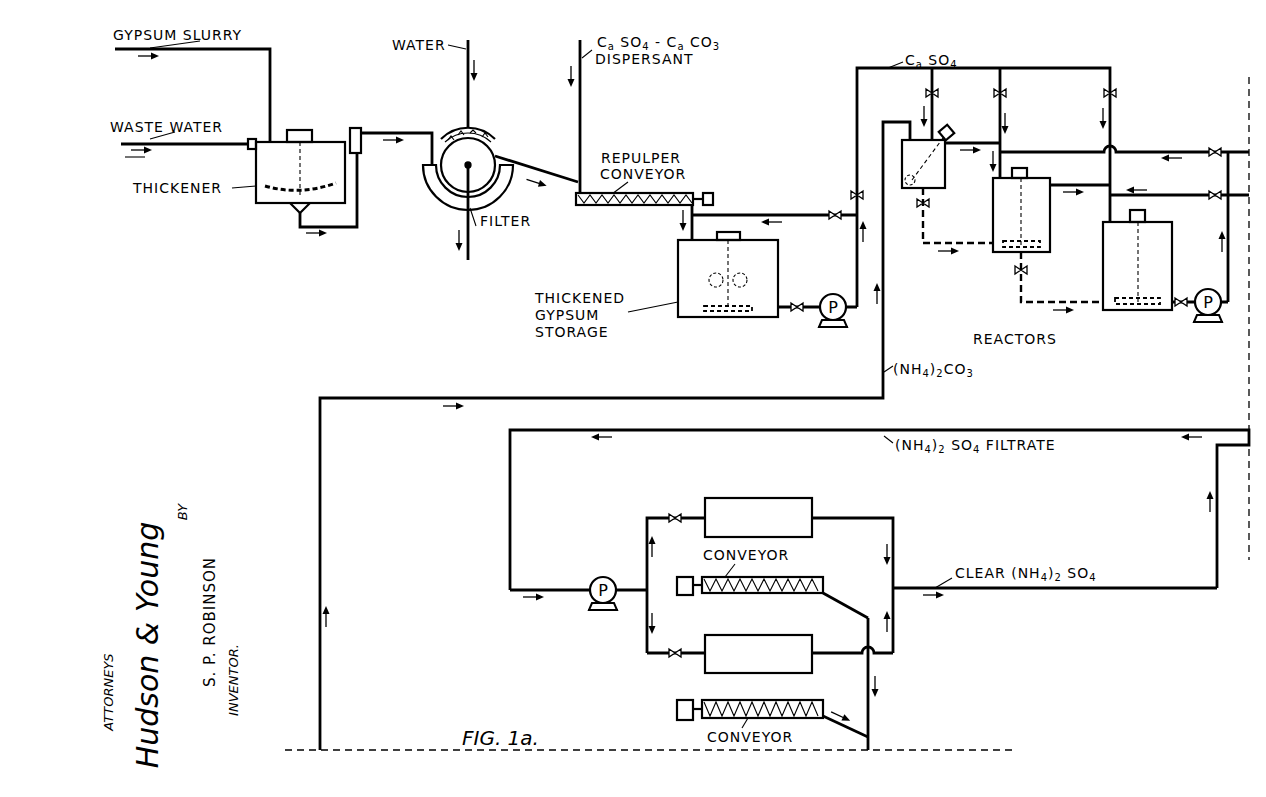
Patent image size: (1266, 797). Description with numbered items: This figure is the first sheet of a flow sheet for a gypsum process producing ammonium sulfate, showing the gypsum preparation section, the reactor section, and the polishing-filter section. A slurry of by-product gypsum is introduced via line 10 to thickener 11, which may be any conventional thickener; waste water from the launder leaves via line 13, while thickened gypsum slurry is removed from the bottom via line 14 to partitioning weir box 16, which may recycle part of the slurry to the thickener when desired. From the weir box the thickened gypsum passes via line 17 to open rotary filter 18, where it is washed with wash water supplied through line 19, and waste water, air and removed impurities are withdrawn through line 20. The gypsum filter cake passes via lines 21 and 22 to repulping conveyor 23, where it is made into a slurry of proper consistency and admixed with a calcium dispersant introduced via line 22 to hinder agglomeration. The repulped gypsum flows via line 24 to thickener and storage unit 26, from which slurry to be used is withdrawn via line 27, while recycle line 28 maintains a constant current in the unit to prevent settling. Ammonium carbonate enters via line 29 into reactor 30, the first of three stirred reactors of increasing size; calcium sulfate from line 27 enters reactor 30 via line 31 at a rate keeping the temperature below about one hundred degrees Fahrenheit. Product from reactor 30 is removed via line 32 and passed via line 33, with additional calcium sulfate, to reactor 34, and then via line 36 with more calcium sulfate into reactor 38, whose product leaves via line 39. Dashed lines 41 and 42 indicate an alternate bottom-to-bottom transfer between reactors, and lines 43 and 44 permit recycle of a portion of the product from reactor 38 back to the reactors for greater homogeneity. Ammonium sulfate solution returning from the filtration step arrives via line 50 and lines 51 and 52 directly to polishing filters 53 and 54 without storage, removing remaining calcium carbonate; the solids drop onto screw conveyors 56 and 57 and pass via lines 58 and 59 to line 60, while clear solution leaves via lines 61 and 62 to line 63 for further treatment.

The line 10 is at (270, 88).
The thickener 11 is at (265, 199).
The line 13 is at (230, 144).
The line 14 is at (358, 205).
The partitioning weir box 16 is at (350, 128).
The line 17 is at (413, 131).
The open rotary filter 18 is at (430, 185).
The line 19 is at (462, 81).
The line 20 is at (471, 248).
The line 21 is at (513, 163).
The line 22 is at (580, 88).
The repulping conveyor 23 is at (604, 206).
The line 24 is at (686, 240).
The thickener and storage unit 26 is at (678, 279).
The line 27 is at (857, 247).
The recycle line 28 is at (786, 213).
The line 29 is at (884, 290).
The reactor 30 is at (945, 171).
The line 31 is at (932, 110).
The line 32 is at (968, 142).
The line 33 is at (1000, 114).
The reactor 34 is at (1050, 221).
The line 36 is at (1056, 183).
The reactor 38 is at (1172, 246).
The line 39 is at (1244, 150).
The dashed line 41 is at (926, 220).
The dashed line 42 is at (1024, 290).
The line 43 is at (1172, 195).
The line 44 is at (1185, 150).
The line 50 is at (732, 431).
The line 51 is at (645, 521).
The line 52 is at (645, 651).
The polishing filter 53 is at (752, 498).
The polishing filter 54 is at (745, 636).
The screw conveyor 56 is at (764, 594).
The screw conveyor 57 is at (683, 719).
The line 58 is at (838, 597).
The line 59 is at (850, 727).
The line 60 is at (869, 716).
The line 61 is at (894, 530).
The line 62 is at (894, 640).
The line 63 is at (1100, 589).